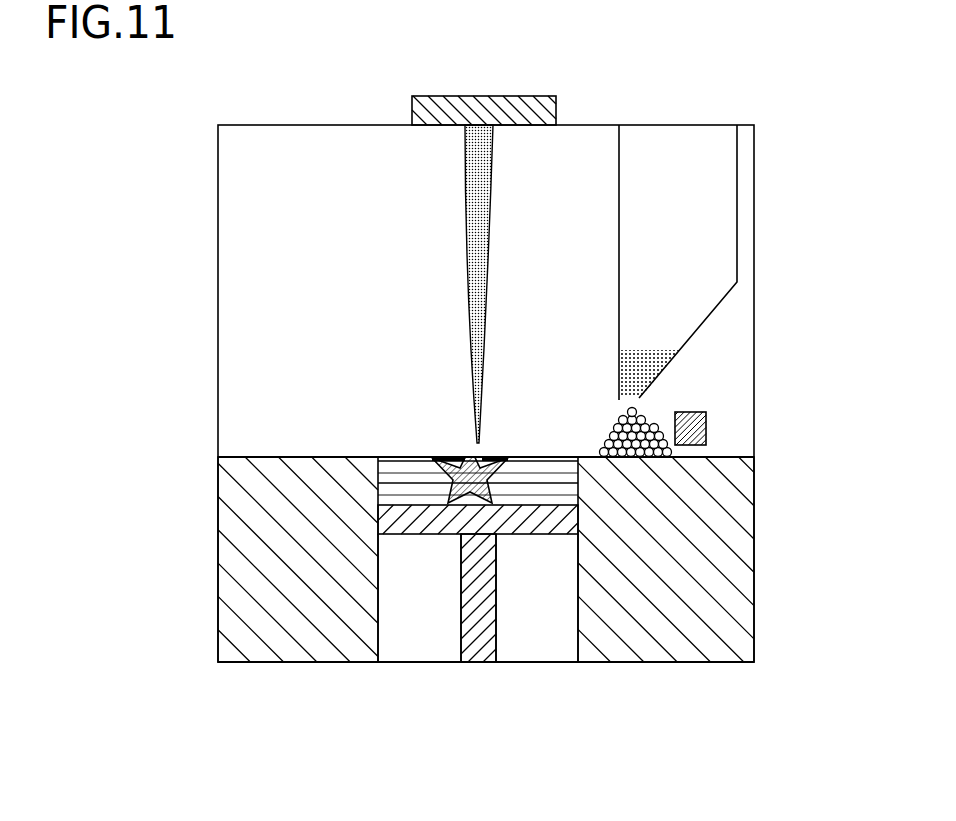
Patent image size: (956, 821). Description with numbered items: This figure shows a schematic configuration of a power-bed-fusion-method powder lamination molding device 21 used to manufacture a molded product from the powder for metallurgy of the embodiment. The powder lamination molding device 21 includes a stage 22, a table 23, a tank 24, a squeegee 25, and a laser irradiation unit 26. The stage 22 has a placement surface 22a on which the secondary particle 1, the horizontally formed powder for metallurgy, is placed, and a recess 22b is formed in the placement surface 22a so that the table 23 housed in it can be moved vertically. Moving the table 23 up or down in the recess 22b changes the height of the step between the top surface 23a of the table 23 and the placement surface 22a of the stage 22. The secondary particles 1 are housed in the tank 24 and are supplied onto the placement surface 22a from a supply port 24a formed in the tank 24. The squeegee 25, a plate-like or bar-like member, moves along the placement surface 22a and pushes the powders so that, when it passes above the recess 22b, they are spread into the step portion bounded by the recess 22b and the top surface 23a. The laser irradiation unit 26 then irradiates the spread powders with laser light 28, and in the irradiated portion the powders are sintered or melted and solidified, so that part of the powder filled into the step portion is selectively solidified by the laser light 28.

The secondary particle 1 is at (667, 458).
The powder lamination molding device 21 is at (772, 60).
The stage 22 is at (235, 498).
The placement surface 22a is at (264, 457).
The recess 22b is at (378, 625).
The table 23 is at (523, 525).
The top surface 23a is at (563, 489).
The tank 24 is at (693, 340).
The supply port 24a is at (638, 398).
The squeegee 25 is at (706, 425).
The laser irradiation unit 26 is at (516, 96).
The laser light 28 is at (465, 210).